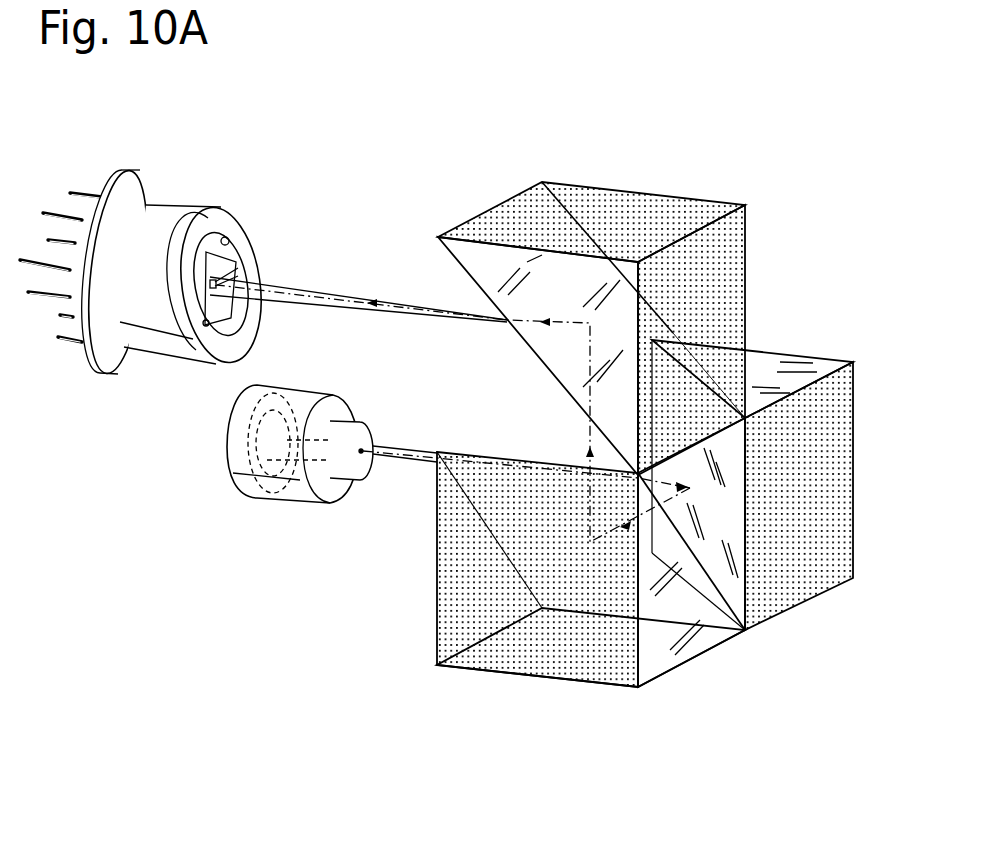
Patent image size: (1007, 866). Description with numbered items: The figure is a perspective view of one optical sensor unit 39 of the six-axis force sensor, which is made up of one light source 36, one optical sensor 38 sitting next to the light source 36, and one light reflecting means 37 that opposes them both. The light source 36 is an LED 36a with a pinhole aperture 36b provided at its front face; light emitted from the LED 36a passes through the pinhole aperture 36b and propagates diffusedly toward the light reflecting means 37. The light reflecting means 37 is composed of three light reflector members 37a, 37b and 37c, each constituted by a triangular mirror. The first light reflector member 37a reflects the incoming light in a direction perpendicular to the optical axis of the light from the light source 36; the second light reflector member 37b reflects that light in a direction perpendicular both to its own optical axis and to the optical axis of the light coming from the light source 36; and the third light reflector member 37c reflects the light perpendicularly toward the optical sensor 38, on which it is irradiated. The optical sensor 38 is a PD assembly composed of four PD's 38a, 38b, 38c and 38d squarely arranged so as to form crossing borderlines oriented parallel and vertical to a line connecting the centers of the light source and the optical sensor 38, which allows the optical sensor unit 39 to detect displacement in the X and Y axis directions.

The light source 36 is at (298, 470).
The LED 36a is at (285, 442).
The pinhole aperture 36b is at (364, 451).
The light reflecting means 37 is at (662, 430).
The first light reflector member 37a is at (787, 352).
The second light reflector member 37b is at (520, 660).
The third light reflector member 37c is at (640, 198).
The optical sensor 38 is at (168, 303).
The PD 38a is at (210, 283).
The PD 38b is at (225, 237).
The PD 38c is at (220, 303).
The PD 38d is at (236, 270).
The optical sensor unit 39 is at (356, 184).